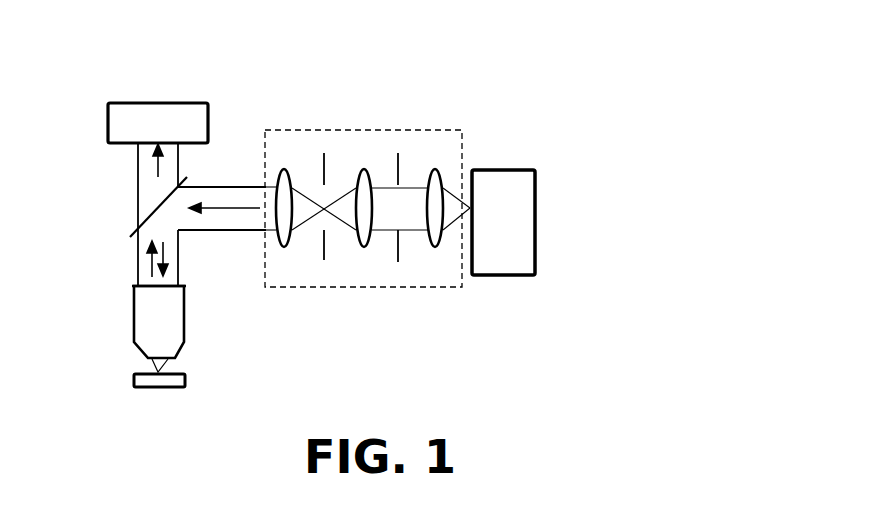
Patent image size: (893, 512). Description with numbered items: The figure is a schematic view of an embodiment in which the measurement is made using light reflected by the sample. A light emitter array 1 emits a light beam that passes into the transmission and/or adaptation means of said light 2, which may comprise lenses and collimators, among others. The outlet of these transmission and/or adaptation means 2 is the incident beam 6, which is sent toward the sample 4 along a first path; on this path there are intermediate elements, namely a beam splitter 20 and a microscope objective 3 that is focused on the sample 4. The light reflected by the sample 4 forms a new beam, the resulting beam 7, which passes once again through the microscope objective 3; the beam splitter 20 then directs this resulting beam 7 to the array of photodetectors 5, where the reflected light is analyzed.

The light emitter array 1 is at (513, 170).
The transmission and/or adaptation means of light 2 is at (317, 130).
The microscope objective 3 is at (152, 307).
The sample 4 is at (135, 377).
The array of photodetectors 5 is at (145, 118).
The incident beam 6 is at (163, 248).
The resulting beam 7 is at (153, 260).
The beam splitter 20 is at (160, 203).